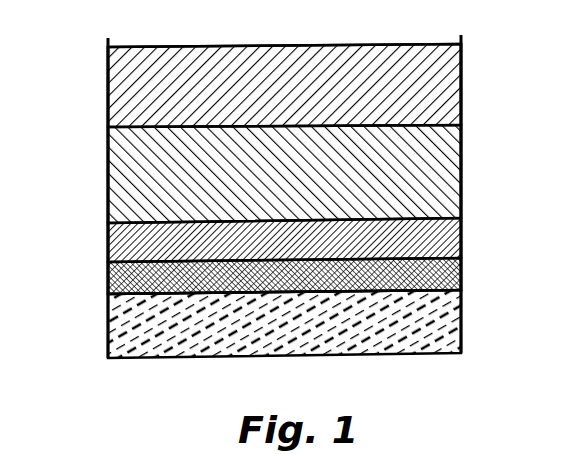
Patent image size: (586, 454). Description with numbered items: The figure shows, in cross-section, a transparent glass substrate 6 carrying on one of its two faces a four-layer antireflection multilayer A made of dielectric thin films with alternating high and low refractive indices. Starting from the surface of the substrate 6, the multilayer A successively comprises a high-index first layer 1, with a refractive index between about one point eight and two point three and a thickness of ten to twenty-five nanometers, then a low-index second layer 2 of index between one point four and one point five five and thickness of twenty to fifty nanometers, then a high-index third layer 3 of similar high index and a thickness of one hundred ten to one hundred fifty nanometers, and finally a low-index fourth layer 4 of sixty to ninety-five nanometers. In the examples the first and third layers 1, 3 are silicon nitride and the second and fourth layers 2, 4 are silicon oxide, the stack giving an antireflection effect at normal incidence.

The antireflection multilayer A is at (104, 293).
The high-index first layer 1 is at (461, 272).
The low-index second layer 2 is at (461, 236).
The high-index third layer 3 is at (455, 136).
The low-index fourth layer 4 is at (447, 89).
The glass substrate 6 is at (452, 315).